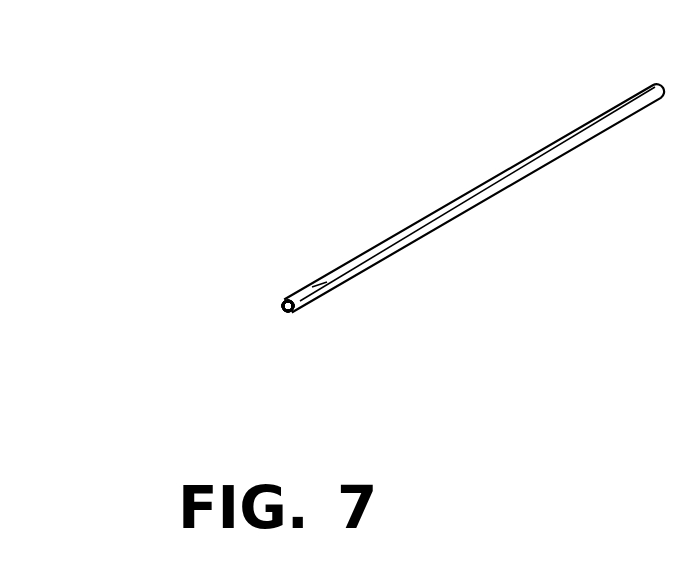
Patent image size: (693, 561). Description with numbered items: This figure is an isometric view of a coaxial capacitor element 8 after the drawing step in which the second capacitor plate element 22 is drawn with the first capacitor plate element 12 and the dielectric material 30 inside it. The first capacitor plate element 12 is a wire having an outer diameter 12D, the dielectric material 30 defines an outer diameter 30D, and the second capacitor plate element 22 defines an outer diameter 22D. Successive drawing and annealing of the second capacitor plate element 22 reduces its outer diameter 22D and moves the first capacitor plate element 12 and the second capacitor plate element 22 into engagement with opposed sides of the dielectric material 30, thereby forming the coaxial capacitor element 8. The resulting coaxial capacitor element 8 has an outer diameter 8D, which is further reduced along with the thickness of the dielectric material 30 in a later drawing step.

The coaxial capacitor element 8 is at (382, 242).
The outer diameter of coaxial capacitor element 8D is at (422, 240).
The first capacitor plate element 12 is at (280, 305).
The outer diameter of first capacitor plate element 12D is at (280, 308).
The dielectric material 30 is at (283, 312).
The outer diameter of dielectric material 30D is at (283, 317).
The second capacitor plate element 22 is at (293, 308).
The outer diameter of second capacitor plate element 22D is at (292, 312).